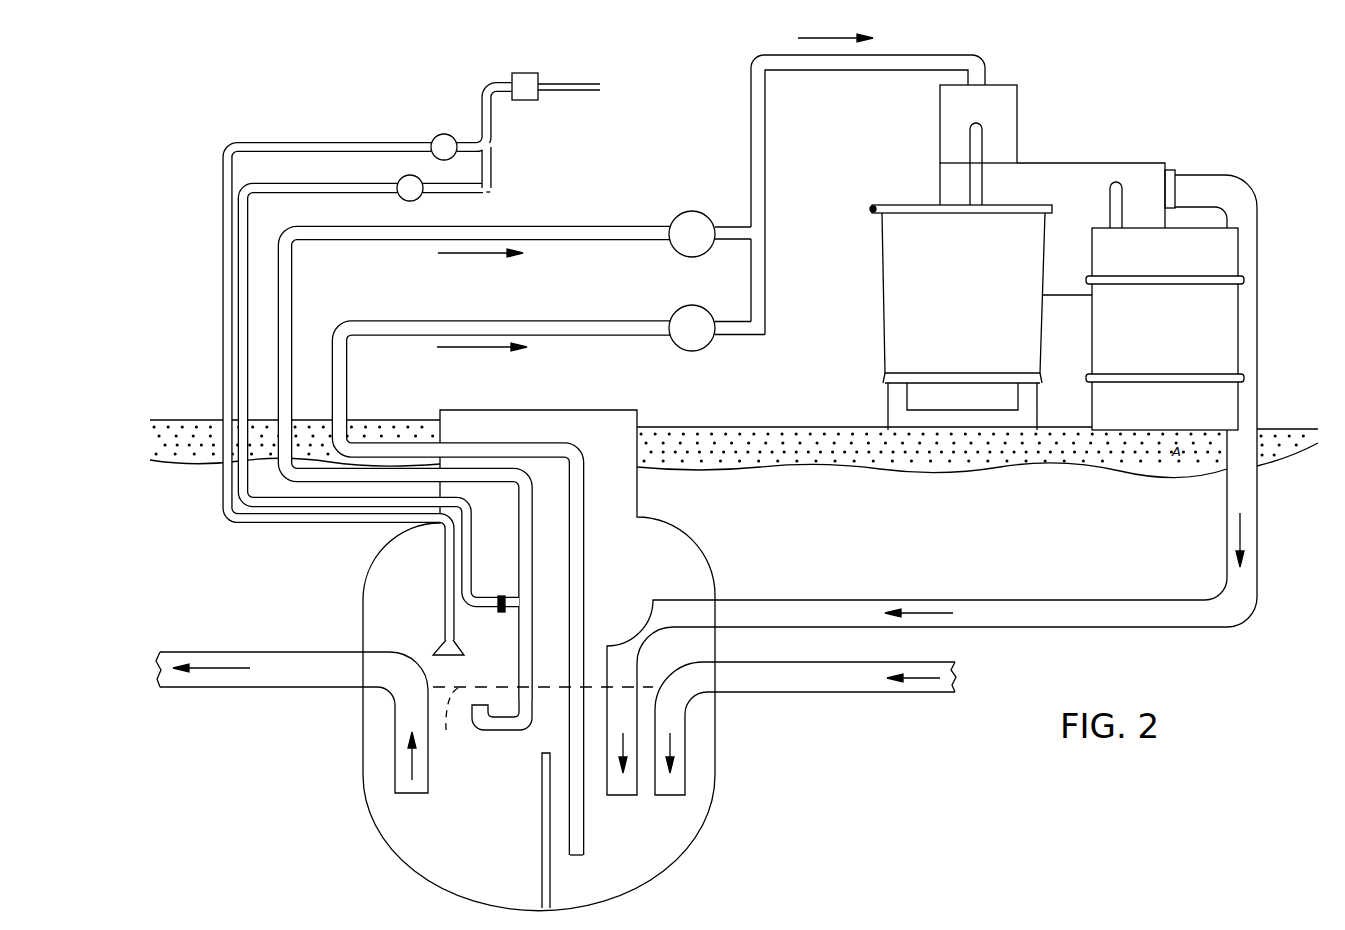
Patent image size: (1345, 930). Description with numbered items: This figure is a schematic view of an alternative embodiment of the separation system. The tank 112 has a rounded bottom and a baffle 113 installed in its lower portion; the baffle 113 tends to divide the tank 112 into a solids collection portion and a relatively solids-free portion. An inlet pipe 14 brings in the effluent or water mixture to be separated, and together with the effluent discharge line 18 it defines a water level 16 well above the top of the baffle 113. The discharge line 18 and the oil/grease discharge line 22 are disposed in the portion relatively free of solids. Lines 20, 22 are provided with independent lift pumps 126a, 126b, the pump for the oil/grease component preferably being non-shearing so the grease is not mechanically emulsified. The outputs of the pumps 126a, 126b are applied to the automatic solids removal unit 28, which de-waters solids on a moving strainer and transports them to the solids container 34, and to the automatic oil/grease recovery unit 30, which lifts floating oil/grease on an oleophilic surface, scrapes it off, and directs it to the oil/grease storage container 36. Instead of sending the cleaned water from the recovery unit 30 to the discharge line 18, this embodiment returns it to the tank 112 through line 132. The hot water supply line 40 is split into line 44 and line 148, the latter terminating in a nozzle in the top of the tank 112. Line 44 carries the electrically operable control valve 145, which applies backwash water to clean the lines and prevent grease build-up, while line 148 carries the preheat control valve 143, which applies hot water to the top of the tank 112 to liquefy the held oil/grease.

The inlet pipe 14 is at (842, 692).
The static water line 16 is at (543, 722).
The discharge line 18 is at (407, 731).
The line 20 is at (583, 850).
The oil/grease discharge line 22 is at (524, 697).
The automatic solids removal unit 28 is at (1015, 92).
The automatic oil/grease recovery unit 30 is at (1055, 172).
The solids container 34 is at (980, 290).
The oil/grease storage container 36 is at (1178, 345).
The hot water supply line 40 is at (527, 73).
The line 44 is at (248, 200).
The tank 112 is at (697, 843).
The baffle 113 is at (542, 828).
The lift pump 126a is at (693, 305).
The lift pump 126b is at (693, 211).
The line 132 is at (1225, 176).
The control valve 143 is at (452, 134).
The control valve 145 is at (413, 174).
The line 148 is at (352, 522).